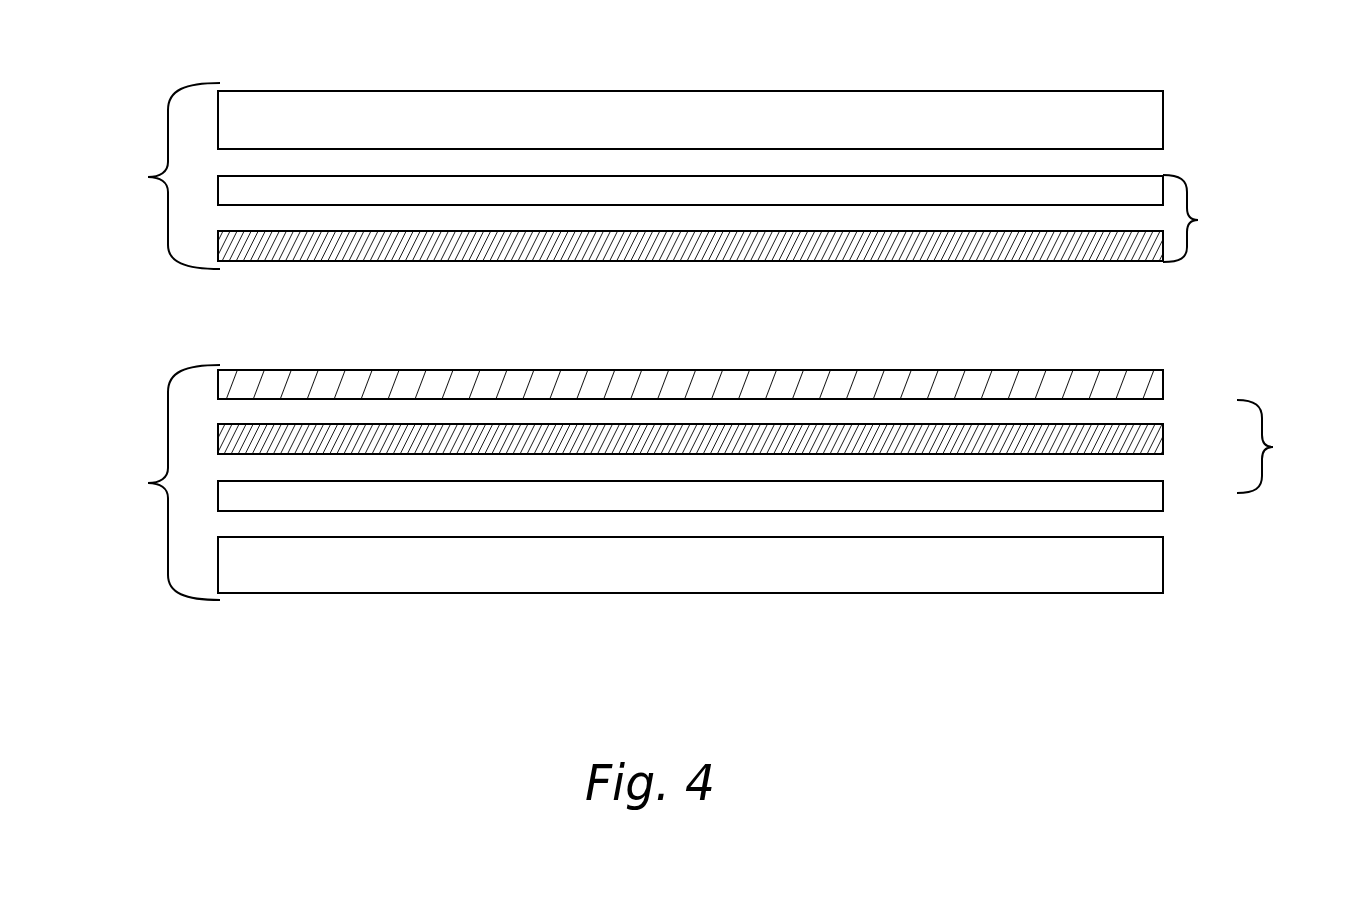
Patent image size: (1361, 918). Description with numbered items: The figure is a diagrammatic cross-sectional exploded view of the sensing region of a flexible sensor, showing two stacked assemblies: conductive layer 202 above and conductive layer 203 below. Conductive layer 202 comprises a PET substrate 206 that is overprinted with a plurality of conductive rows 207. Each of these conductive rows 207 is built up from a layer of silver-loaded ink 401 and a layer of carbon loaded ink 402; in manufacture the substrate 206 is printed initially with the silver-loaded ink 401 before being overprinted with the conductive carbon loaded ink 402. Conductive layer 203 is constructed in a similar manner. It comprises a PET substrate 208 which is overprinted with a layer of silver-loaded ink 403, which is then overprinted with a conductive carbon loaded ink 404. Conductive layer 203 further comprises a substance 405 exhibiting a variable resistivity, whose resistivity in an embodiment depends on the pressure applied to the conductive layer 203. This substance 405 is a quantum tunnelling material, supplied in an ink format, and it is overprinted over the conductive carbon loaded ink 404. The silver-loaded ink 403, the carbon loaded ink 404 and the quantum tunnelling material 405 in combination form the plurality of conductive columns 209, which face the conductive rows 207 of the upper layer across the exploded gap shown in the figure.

The conductive layer 202 is at (148, 177).
The conductive layer 203 is at (148, 483).
The substrate 206 is at (1152, 95).
The conductive rows 207 is at (1198, 220).
The PET substrate 208 is at (1163, 565).
The conductive columns 209 is at (1273, 447).
The silver-loaded ink 401 is at (1148, 180).
The carbon loaded ink 402 is at (1155, 262).
The silver-loaded ink 403 is at (1163, 496).
The carbon loaded ink 404 is at (1163, 440).
The quantum tunnelling material 405 is at (1163, 384).